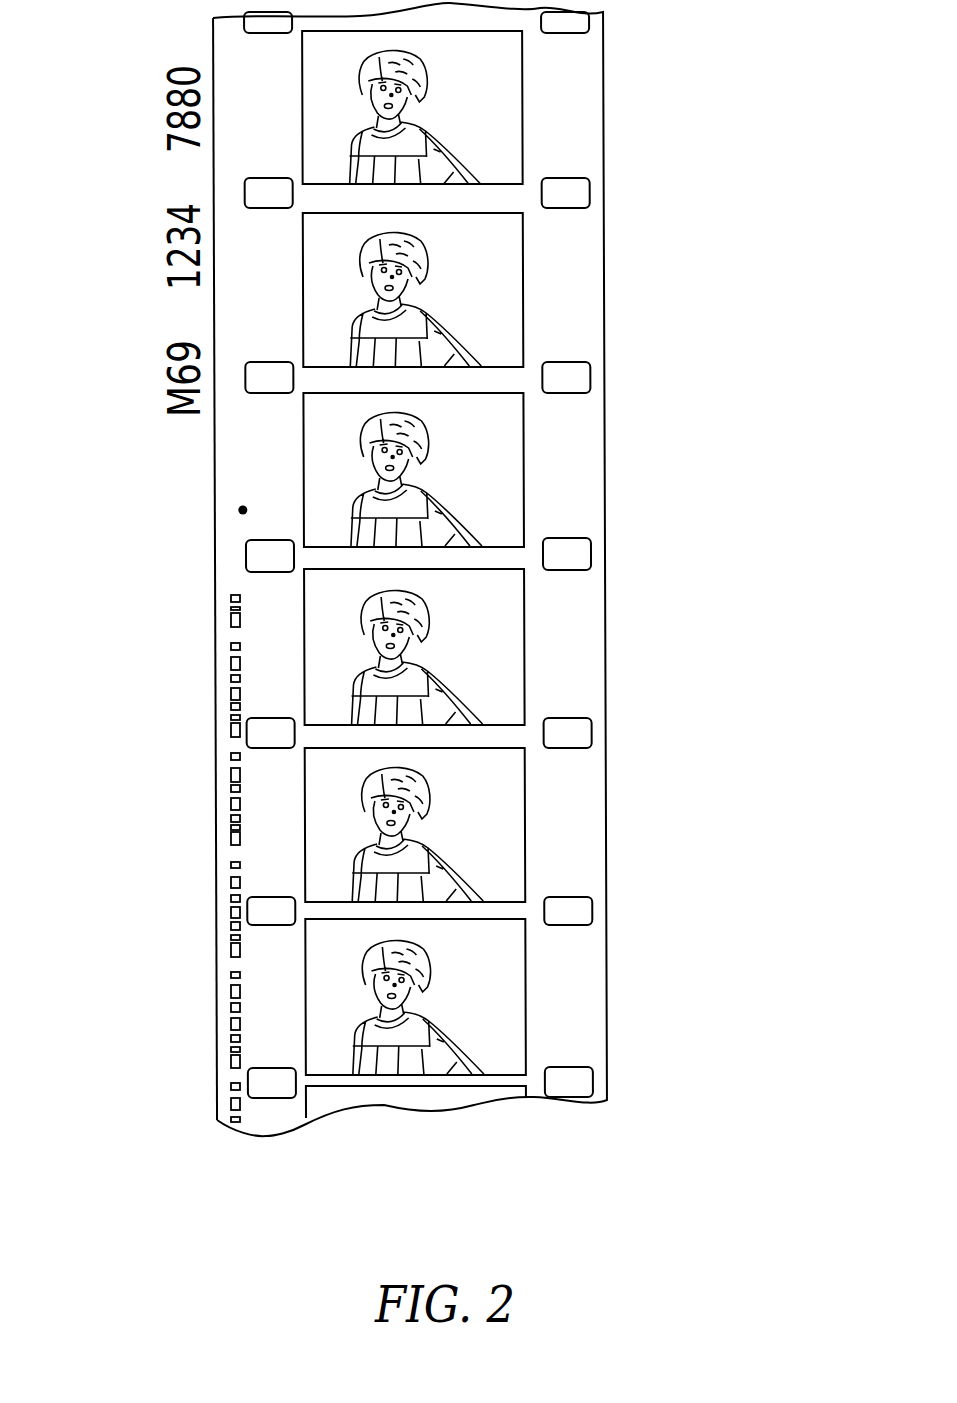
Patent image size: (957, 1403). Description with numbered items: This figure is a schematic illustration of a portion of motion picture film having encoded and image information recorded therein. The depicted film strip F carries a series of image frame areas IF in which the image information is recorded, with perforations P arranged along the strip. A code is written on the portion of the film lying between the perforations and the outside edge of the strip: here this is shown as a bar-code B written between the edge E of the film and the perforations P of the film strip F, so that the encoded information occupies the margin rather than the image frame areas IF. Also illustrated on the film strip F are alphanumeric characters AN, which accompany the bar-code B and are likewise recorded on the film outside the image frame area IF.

The alphanumeric characters AN is at (234, 43).
The image frame area IF is at (475, 122).
The film strip F is at (650, 572).
The bar-code B is at (231, 598).
The edge E is at (214, 1094).
The perforations P is at (283, 1098).